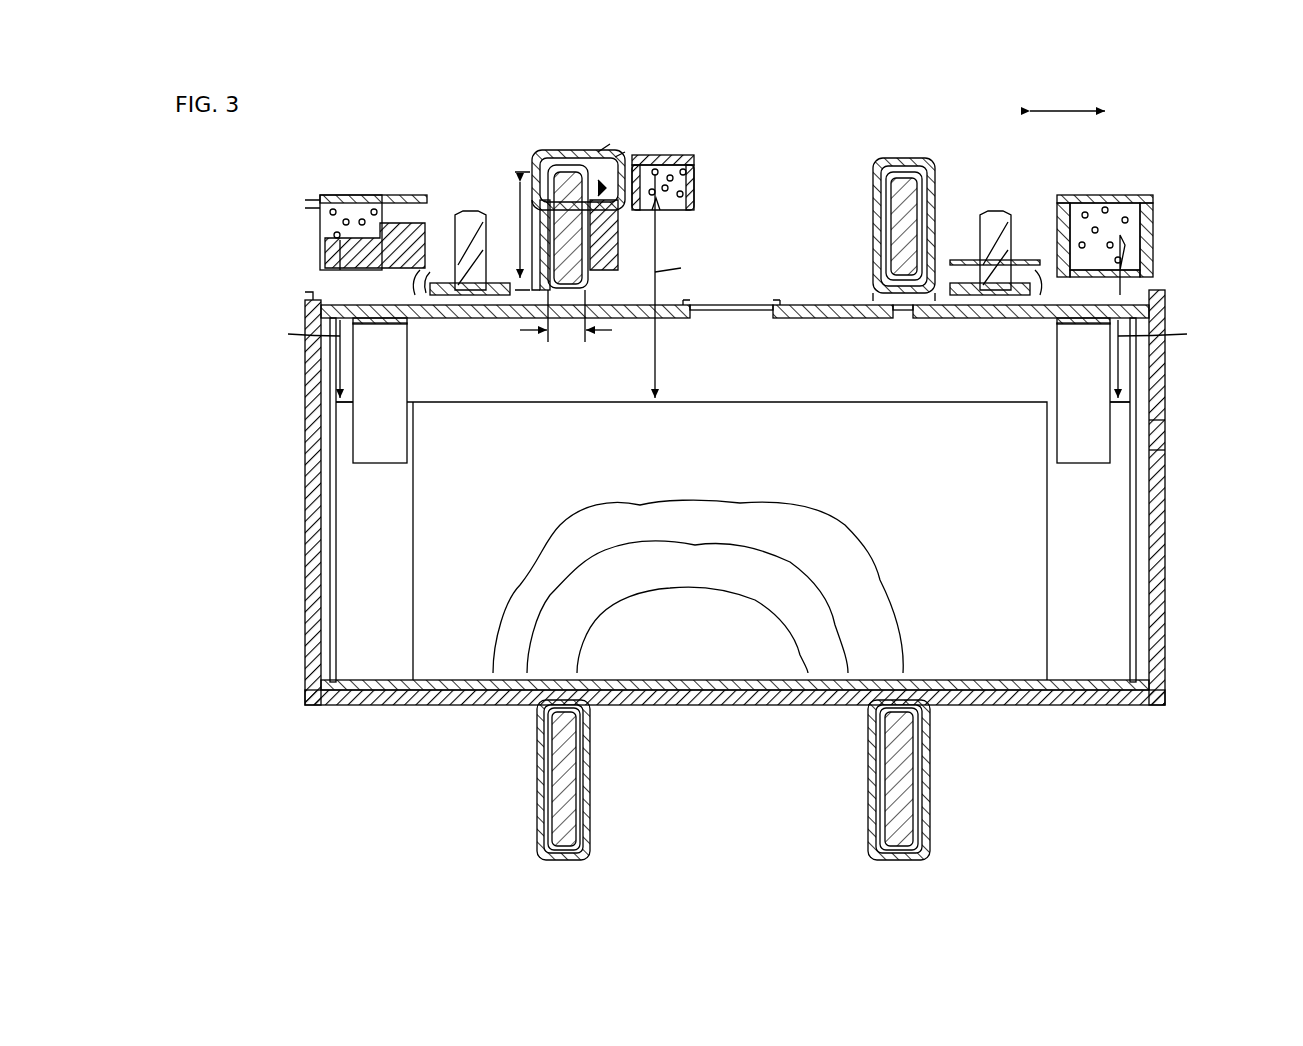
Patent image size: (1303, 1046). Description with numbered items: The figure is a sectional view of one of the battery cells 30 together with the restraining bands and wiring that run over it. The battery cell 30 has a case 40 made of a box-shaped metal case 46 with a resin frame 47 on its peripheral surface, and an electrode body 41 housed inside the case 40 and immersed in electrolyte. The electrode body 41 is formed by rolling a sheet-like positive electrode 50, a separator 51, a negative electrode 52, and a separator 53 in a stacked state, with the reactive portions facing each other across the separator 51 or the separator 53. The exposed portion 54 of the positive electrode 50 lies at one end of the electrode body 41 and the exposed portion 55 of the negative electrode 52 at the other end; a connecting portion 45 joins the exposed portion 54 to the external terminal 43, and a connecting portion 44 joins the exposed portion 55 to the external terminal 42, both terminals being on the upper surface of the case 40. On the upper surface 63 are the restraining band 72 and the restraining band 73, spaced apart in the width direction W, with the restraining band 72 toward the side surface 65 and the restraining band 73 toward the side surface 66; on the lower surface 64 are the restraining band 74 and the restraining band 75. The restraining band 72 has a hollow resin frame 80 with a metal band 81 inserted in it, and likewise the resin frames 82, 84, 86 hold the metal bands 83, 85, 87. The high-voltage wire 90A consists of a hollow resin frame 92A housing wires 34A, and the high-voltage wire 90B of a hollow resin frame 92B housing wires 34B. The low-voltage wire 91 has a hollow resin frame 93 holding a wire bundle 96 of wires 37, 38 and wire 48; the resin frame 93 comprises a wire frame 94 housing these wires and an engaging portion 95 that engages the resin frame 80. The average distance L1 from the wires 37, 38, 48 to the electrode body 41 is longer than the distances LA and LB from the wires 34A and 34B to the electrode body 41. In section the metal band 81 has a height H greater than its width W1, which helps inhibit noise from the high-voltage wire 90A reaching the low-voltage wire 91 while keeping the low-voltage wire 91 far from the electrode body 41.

The battery cell 30 is at (466, 142).
The wires 34A is at (328, 221).
The wires 34B is at (1103, 196).
The wire 37 is at (690, 180).
The wire 38 is at (690, 197).
The case 40 is at (1218, 412).
The electrode body 41 is at (1133, 607).
The external terminal 42 is at (992, 226).
The external terminal 43 is at (471, 226).
The connecting portion 44 is at (1095, 402).
The connecting portion 45 is at (372, 426).
The metal case 46 is at (1155, 453).
The resin frame 47 is at (1158, 419).
The wire 48 is at (675, 165).
The positive electrode 50 is at (846, 505).
The separator 51 is at (802, 560).
The negative electrode 52 is at (757, 580).
The separator 53 is at (730, 645).
The exposed portion 54 is at (377, 650).
The exposed portion 55 is at (1087, 645).
The upper surface 63 is at (828, 305).
The lower surface 64 is at (660, 690).
The side surface 65 is at (312, 546).
The side surface 66 is at (1160, 534).
The restraining band 72 is at (540, 107).
The restraining band 73 is at (875, 113).
The restraining band 74 is at (487, 783).
The restraining band 75 is at (981, 783).
The resin frame 80 is at (606, 240).
The metal band 81 is at (560, 190).
The resin frame 82 is at (908, 175).
The metal band 83 is at (893, 175).
The resin frame 84 is at (546, 835).
The metal band 85 is at (562, 797).
The resin frame 86 is at (925, 833).
The metal band 87 is at (905, 797).
The high-voltage wire 90A is at (250, 208).
The high-voltage wire 90B is at (1075, 150).
The low-voltage wire 91 is at (786, 96).
The resin frame 92A is at (332, 254).
The resin frame 92B is at (1130, 196).
The resin frame 93 is at (750, 96).
The wire frame 94 is at (655, 160).
The engaging portion 95 is at (598, 152).
The wire bundle 96 is at (750, 146).
The height H is at (509, 231).
The width direction W is at (1067, 98).
The width W1 is at (566, 327).
The distance L1 is at (682, 286).
The distance LA is at (298, 359).
The distance LB is at (1168, 359).